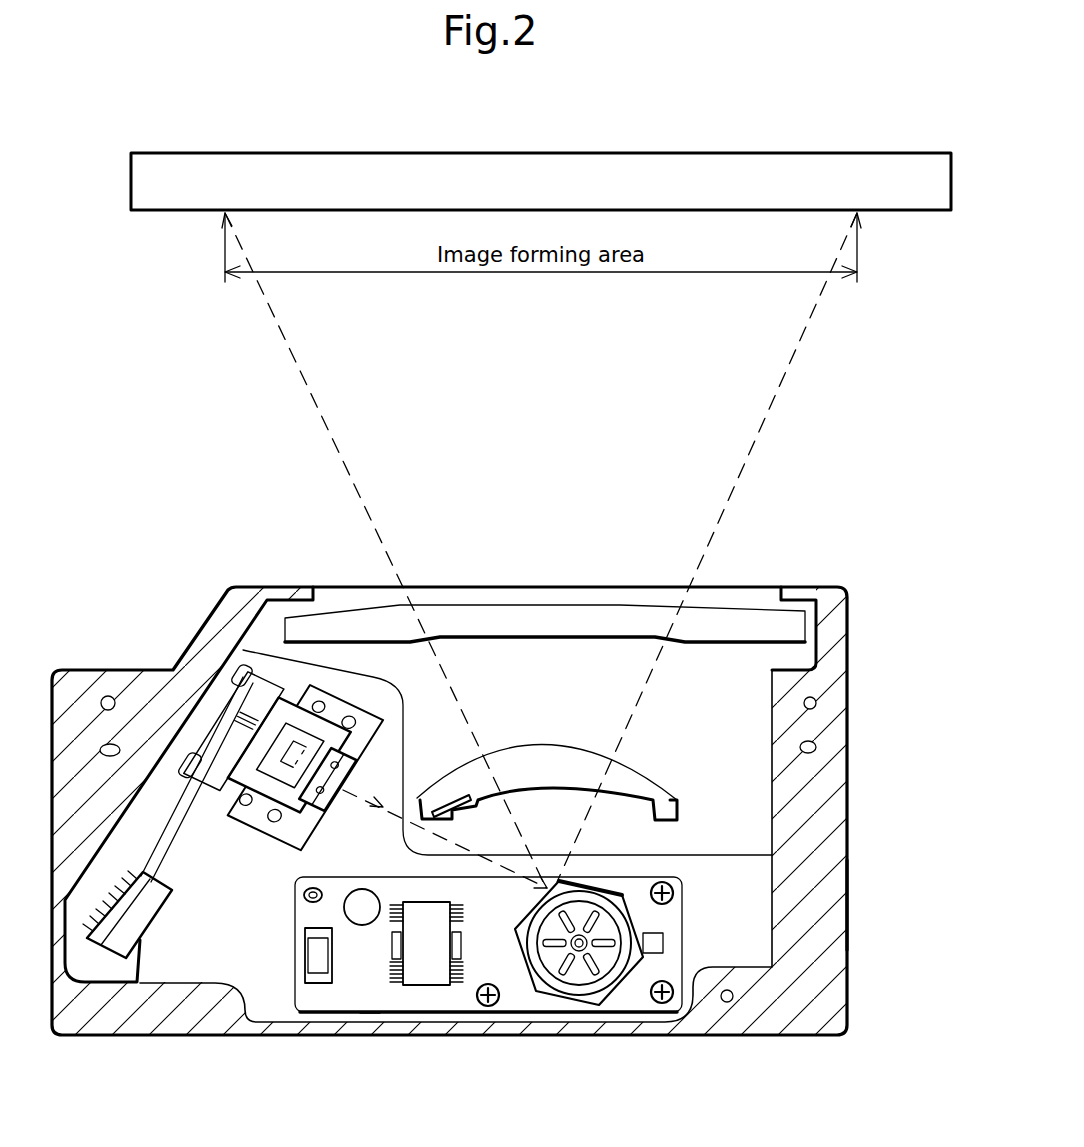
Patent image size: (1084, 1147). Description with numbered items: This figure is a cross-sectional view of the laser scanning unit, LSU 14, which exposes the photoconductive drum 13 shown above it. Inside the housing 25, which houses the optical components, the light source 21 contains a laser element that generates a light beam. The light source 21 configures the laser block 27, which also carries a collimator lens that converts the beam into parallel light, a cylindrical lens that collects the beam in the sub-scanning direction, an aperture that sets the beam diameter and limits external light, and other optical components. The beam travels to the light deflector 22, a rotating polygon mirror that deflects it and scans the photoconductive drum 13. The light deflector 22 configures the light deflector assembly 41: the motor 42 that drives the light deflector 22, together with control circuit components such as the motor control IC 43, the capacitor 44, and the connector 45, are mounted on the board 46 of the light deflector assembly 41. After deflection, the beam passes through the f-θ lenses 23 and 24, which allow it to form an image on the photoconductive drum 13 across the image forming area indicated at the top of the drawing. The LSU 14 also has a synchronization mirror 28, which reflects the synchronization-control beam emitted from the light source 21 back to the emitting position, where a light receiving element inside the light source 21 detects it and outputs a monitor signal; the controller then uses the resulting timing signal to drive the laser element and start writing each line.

The photoconductive drum 13 is at (726, 153).
The laser scanning unit (LSU) 14 is at (220, 561).
The light source 21 is at (236, 737).
The light deflector 22 is at (660, 955).
The f-θ lens 23 is at (680, 808).
The f-θ lens 24 is at (722, 641).
The housing 25 is at (848, 900).
The laser block 27 is at (254, 856).
The synchronization mirror 28 is at (433, 816).
The light deflector assembly 41 is at (518, 1028).
The motor 42 is at (627, 987).
The motor control IC 43 is at (418, 988).
The capacitor 44 is at (361, 926).
The connector 45 is at (305, 965).
The board 46 is at (367, 1012).